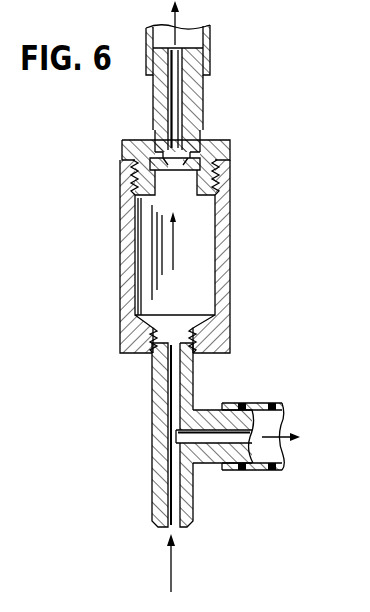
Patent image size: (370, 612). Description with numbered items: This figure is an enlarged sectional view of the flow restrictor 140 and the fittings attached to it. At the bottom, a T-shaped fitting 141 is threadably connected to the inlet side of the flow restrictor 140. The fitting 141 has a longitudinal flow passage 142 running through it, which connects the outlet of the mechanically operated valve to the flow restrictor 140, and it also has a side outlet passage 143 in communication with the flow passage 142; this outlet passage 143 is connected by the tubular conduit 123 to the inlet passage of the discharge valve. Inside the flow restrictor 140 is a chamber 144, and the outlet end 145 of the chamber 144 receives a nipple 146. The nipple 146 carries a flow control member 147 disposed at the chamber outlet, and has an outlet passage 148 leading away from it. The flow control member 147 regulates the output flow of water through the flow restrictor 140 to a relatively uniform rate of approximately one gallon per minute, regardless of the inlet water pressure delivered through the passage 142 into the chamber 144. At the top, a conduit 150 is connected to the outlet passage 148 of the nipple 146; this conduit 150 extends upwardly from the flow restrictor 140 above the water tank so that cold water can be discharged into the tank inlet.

The tubular conduit 123 is at (277, 407).
The flow restrictor 140 is at (114, 232).
The T-shaped fitting 141 is at (198, 494).
The longitudinal flow passage 142 is at (171, 373).
The outlet passage 143 is at (270, 471).
The chamber 144 is at (198, 238).
The outlet end 145 is at (218, 163).
The nipple 146 is at (194, 135).
The flow control member 147 is at (122, 143).
The outlet passage 148 is at (172, 88).
The conduit 150 is at (208, 34).